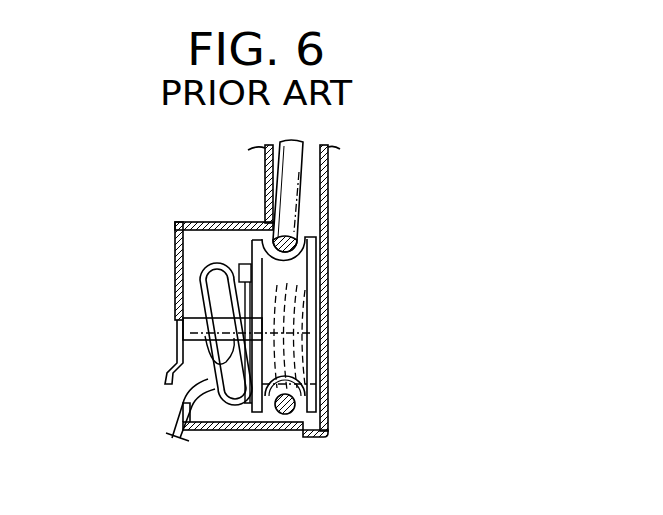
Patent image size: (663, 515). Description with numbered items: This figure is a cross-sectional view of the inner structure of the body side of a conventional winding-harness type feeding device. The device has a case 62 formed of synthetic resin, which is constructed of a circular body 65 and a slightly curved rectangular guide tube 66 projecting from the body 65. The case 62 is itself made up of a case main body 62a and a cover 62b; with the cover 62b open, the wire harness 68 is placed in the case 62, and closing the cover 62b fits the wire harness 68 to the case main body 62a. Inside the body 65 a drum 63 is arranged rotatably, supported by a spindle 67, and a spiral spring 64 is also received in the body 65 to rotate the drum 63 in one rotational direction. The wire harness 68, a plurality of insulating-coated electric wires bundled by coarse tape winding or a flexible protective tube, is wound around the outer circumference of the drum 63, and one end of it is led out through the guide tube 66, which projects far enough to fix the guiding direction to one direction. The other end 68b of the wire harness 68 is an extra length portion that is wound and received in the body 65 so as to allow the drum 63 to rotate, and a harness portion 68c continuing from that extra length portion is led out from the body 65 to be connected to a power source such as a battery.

The case 62 is at (334, 227).
The case main body 62a is at (265, 432).
The cover 62b is at (326, 434).
The drum 63 is at (312, 264).
The spiral spring 64 is at (320, 357).
The circular body 65 is at (175, 260).
The guide tube 66 is at (266, 183).
The spindle 67 is at (177, 335).
The wire harness 68 is at (304, 174).
The other end of the wire harness 68b is at (232, 408).
The harness portion 68c is at (170, 412).